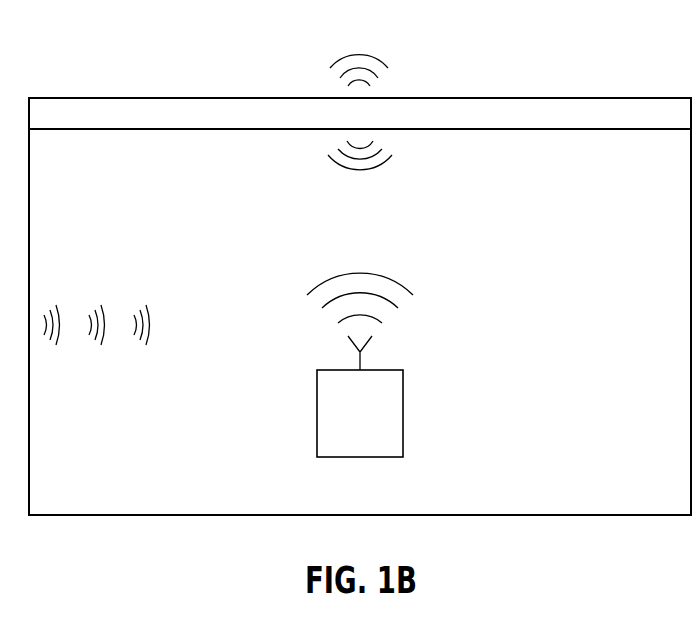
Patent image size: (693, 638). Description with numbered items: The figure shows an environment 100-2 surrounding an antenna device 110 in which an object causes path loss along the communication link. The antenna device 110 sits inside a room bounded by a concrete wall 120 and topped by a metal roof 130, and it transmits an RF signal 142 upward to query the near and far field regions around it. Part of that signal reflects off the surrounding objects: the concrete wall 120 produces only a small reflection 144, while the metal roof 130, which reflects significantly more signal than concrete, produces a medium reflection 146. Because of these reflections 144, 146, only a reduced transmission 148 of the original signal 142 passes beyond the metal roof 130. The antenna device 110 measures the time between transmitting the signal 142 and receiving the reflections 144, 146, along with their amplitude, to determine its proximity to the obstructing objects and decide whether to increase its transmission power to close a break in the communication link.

The environment 100-2 is at (108, 52).
The antenna device 110 is at (406, 410).
The concrete wall 120 is at (360, 516).
The metal roof 130 is at (566, 98).
The transmitted RF signal 142 is at (360, 272).
The small reflection 144 is at (151, 322).
The medium reflection 146 is at (358, 172).
The reduced transmission 148 is at (360, 55).